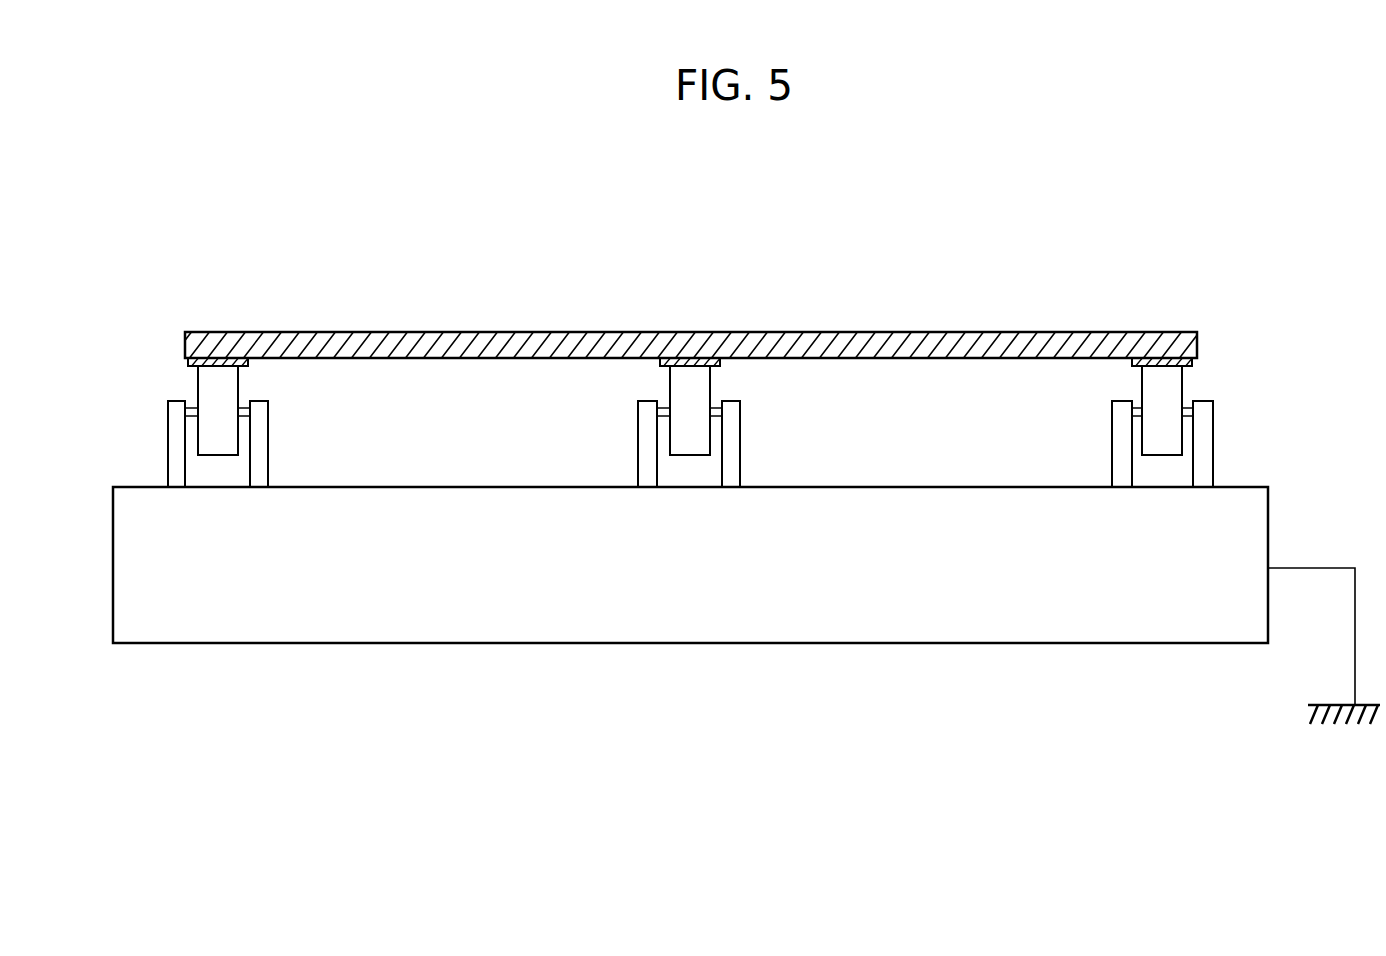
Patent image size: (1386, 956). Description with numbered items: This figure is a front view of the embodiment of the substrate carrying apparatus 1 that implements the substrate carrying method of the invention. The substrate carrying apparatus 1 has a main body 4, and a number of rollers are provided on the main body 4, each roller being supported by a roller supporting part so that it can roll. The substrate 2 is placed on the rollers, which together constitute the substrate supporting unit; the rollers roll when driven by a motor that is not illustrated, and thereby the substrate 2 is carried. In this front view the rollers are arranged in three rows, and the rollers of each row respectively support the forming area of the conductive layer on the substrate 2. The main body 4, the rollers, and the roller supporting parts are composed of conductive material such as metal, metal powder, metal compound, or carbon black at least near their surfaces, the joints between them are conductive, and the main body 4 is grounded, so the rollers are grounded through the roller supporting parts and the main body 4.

The substrate carrying apparatus 1 is at (466, 650).
The substrate 2 is at (878, 350).
The main body 4 is at (675, 600).